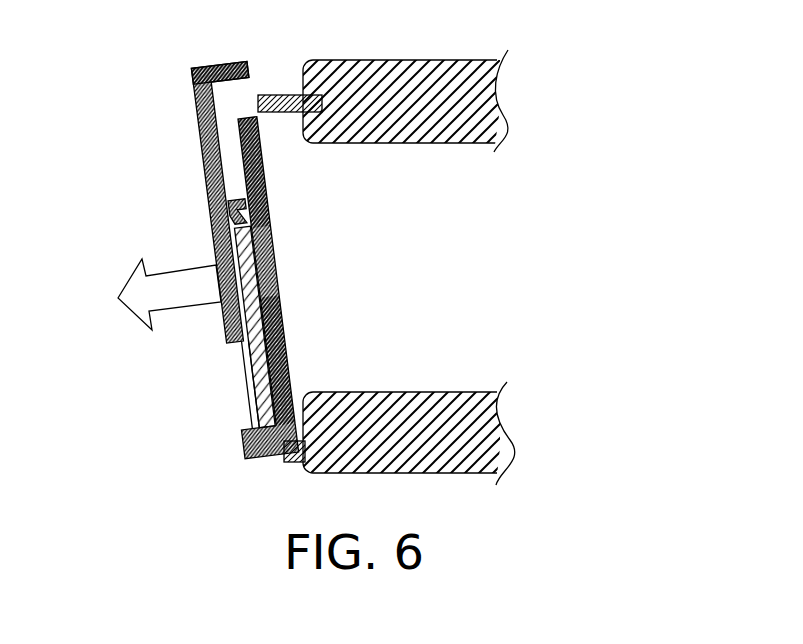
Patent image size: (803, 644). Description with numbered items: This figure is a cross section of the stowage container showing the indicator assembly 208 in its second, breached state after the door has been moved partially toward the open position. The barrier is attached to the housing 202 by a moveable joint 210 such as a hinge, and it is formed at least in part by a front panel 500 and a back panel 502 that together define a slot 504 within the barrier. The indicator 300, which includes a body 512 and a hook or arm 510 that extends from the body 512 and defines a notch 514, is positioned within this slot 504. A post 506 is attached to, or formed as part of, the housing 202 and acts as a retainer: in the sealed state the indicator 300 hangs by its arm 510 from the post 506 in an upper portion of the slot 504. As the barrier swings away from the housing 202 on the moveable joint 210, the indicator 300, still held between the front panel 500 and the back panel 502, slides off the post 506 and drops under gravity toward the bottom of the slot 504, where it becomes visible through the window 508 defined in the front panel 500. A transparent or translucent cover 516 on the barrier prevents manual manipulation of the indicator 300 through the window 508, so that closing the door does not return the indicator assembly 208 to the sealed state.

The housing 202 is at (394, 60).
The indicator assembly 208 is at (147, 237).
The moveable joint 210 is at (291, 465).
The indicator 300 is at (266, 373).
The front panel 500 is at (224, 178).
The back panel 502 is at (284, 270).
The slot 504 is at (233, 147).
The post 506 is at (312, 92).
The window 508 is at (222, 343).
The arm 510 is at (267, 199).
The body 512 is at (274, 318).
The notch 514 is at (224, 211).
The cover 516 is at (247, 428).